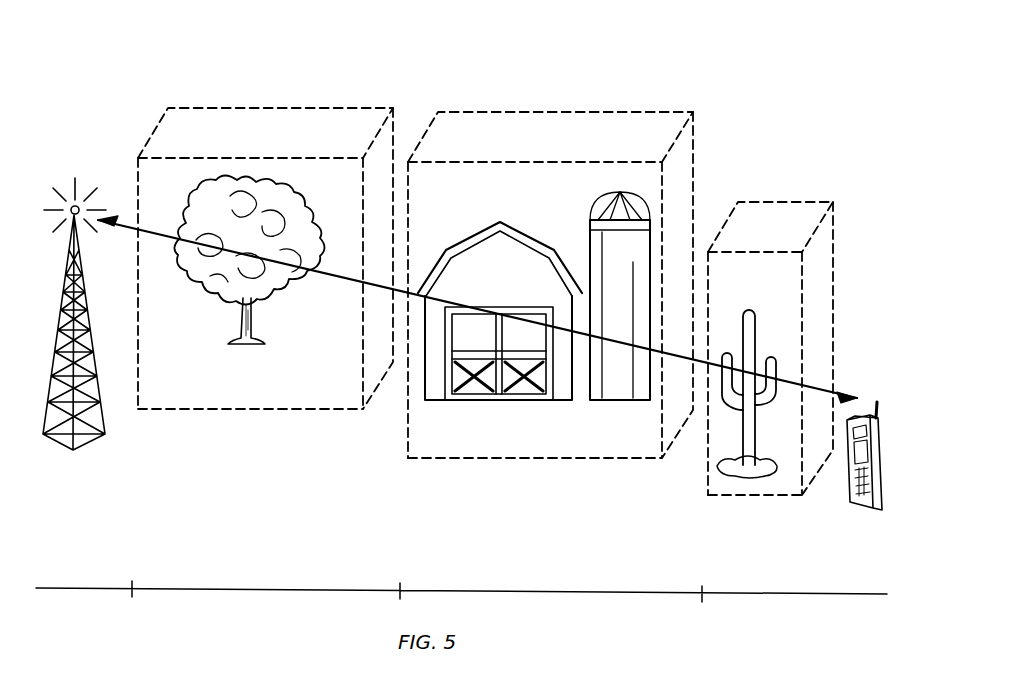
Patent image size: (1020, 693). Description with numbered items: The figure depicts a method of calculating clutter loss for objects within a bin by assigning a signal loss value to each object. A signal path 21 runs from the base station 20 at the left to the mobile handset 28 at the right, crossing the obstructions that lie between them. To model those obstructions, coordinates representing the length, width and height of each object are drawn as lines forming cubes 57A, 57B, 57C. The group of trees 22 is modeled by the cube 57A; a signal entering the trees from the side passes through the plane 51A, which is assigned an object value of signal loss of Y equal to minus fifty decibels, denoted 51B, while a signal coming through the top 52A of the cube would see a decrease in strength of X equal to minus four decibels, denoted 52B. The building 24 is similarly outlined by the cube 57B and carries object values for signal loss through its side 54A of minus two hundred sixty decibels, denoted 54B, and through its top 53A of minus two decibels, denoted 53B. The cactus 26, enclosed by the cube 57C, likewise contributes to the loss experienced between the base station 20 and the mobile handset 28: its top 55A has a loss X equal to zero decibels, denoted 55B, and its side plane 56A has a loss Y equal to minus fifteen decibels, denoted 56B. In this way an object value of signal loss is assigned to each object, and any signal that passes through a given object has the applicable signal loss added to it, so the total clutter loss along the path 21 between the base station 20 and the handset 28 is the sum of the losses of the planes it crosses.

The base station 20 is at (84, 451).
The signal transmission path 21 is at (113, 229).
The group of trees 22 is at (246, 346).
The building 24 is at (523, 402).
The cactus 26 is at (748, 306).
The mobile handset 28 is at (855, 508).
The plane 51A is at (136, 177).
The object value of signal loss Y=−50 dB 51B is at (244, 442).
The top of cube 52A is at (198, 117).
The signal loss X=−4 dB 52B is at (284, 82).
The top of building cube 53A is at (493, 122).
The signal loss −2 dB 53B is at (570, 82).
The side of building cube 54A is at (406, 432).
The signal loss −260 dB 54B is at (533, 492).
The top of cactus cube 55A is at (782, 210).
The signal loss X=0 dB 55B is at (788, 114).
The plane of cactus cube 56A is at (706, 478).
The signal loss Y=−15 dB 56B is at (750, 530).
The cube 57A is at (396, 108).
The cube 57B is at (698, 112).
The cube 57C is at (834, 202).